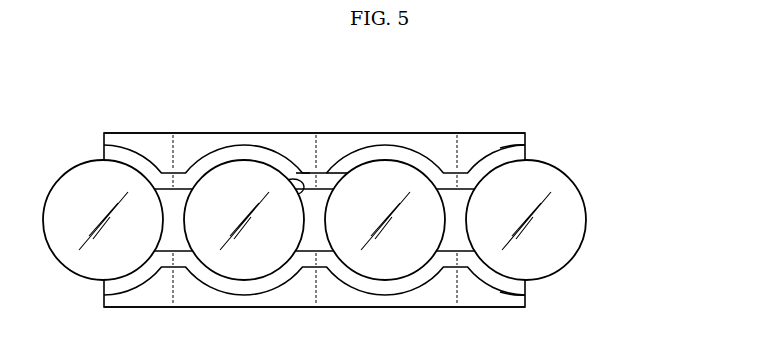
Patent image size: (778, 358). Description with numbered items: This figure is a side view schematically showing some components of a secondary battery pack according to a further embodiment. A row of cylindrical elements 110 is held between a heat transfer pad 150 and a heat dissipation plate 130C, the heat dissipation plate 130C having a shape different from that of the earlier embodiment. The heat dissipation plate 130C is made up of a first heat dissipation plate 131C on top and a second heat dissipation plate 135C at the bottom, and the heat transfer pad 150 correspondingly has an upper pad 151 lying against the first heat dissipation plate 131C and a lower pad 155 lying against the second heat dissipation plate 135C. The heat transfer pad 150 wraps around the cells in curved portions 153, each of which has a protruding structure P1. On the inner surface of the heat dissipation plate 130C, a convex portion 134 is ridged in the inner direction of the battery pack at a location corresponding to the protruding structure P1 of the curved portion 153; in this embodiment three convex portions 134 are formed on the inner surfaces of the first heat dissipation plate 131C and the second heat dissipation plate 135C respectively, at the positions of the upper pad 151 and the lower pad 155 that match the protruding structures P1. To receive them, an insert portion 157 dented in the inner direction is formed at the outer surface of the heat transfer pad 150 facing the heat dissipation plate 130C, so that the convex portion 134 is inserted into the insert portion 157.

The wire / conductor 110 is at (73, 168).
The heat dissipation plate 130C is at (412, 208).
The first heat dissipation plate 131C is at (608, 122).
The second heat dissipation plate 135C is at (608, 318).
The heat transfer pad 150 is at (379, 208).
The upper pad 151 is at (557, 157).
The curved portion 153 is at (262, 166).
The lower pad 155 is at (544, 283).
The insert portion 157 is at (296, 180).
The convex portion 134 is at (325, 174).
The protruding structure P1 is at (282, 183).